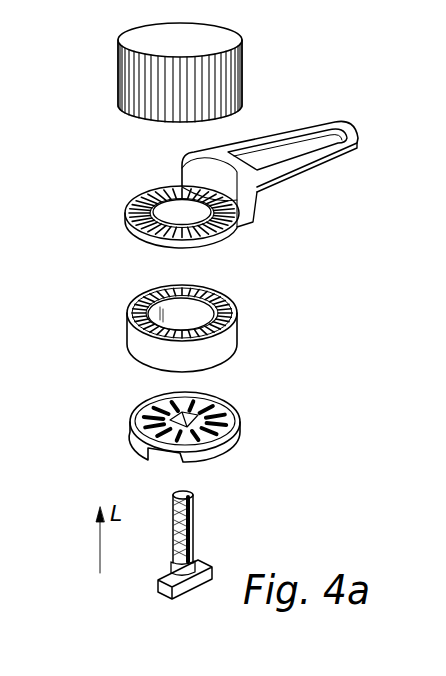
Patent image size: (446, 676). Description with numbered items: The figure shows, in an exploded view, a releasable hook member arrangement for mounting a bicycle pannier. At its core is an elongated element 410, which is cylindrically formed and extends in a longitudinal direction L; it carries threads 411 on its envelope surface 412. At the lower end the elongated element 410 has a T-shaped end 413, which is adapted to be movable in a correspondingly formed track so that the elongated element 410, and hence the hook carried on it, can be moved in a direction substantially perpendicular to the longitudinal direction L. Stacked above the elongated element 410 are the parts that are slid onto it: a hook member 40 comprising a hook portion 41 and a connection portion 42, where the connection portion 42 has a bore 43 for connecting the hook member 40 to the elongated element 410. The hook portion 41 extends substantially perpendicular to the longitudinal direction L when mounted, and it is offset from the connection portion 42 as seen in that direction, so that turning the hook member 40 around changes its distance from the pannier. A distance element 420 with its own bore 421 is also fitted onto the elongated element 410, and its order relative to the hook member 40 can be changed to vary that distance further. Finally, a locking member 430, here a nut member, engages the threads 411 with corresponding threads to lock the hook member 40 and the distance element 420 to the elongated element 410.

The locking member 430 is at (243, 76).
The hook member 40 is at (220, 189).
The hook portion 41 is at (337, 150).
The connection portion 42 is at (124, 212).
The bore 43 is at (174, 213).
The distance element 420 is at (228, 337).
The bore 421 is at (185, 317).
The elongated element 410 is at (254, 567).
The threads 411 is at (196, 526).
The envelope surface 412 is at (196, 526).
The T-shaped end 413 is at (190, 598).